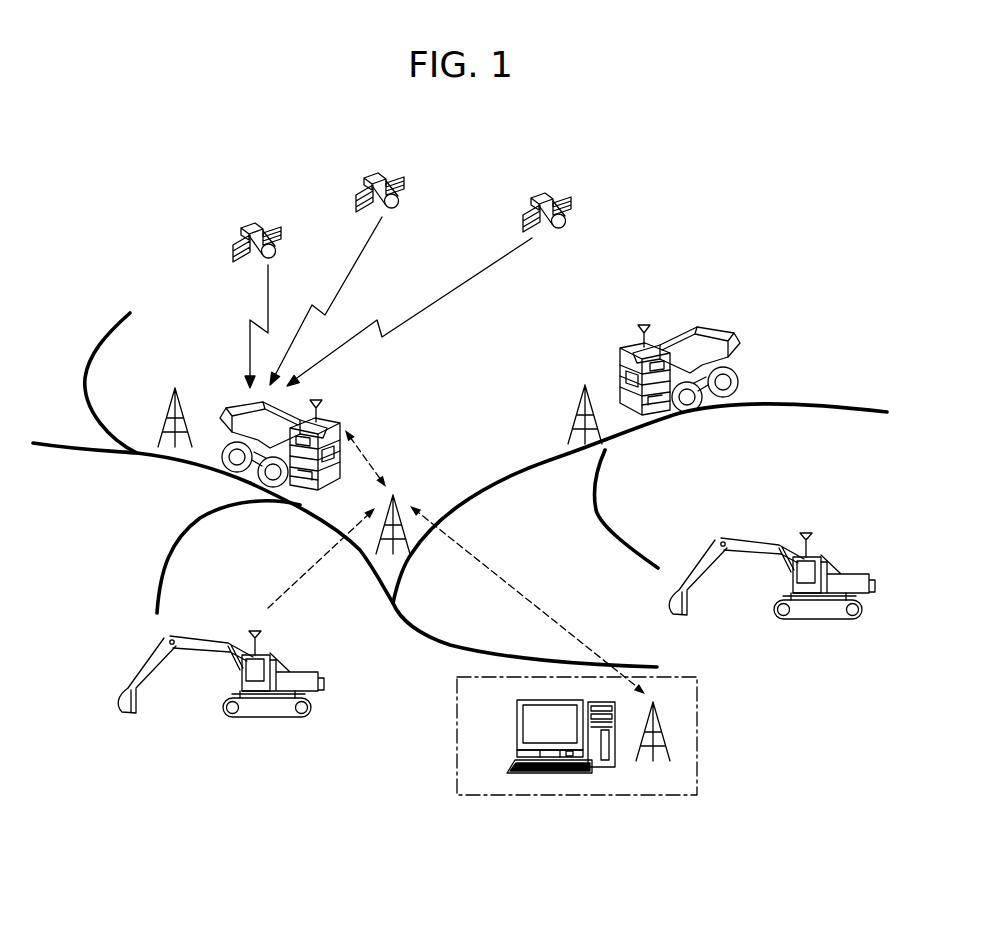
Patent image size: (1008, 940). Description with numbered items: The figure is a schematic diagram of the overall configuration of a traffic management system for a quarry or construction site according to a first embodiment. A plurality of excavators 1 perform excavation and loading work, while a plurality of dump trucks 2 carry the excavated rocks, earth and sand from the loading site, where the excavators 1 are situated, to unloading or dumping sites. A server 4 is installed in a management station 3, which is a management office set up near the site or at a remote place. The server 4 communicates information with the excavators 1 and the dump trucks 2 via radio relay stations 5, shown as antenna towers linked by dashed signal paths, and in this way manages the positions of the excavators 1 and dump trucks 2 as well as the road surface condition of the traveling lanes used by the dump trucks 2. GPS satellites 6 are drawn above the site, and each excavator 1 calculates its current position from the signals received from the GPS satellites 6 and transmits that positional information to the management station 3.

The excavator 1 is at (160, 638).
The dump truck 2 is at (327, 417).
The management station 3 is at (457, 742).
The server 4 is at (603, 770).
The radio relay station 5 is at (397, 499).
The GPS satellite 6 is at (382, 182).